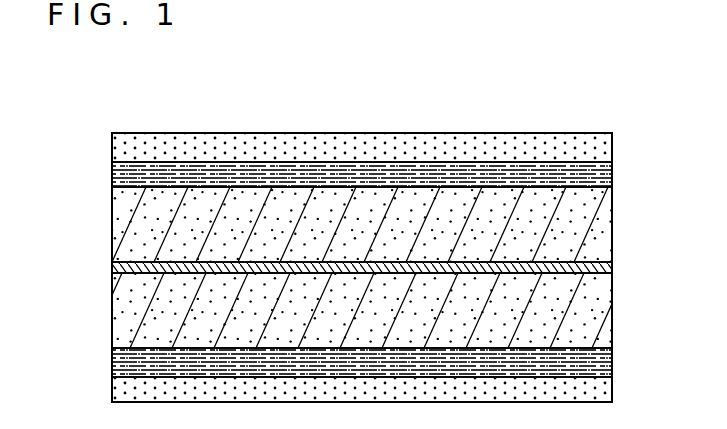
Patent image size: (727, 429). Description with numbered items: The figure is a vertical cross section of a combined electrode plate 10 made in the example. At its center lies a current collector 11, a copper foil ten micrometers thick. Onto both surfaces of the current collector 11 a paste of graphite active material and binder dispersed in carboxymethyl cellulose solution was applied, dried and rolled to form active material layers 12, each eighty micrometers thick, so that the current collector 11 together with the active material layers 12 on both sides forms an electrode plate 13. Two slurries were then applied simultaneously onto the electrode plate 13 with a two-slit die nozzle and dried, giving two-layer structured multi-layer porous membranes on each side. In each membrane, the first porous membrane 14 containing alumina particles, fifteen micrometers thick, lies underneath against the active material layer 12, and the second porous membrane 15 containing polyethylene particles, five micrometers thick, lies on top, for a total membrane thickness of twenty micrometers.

The combined electrode plate 10 is at (396, 125).
The current collector 11 is at (612, 267).
The active material layer 12 is at (590, 222).
The electrode plate 13 is at (354, 268).
The first porous membrane 14 is at (612, 170).
The second porous membrane 15 is at (594, 147).